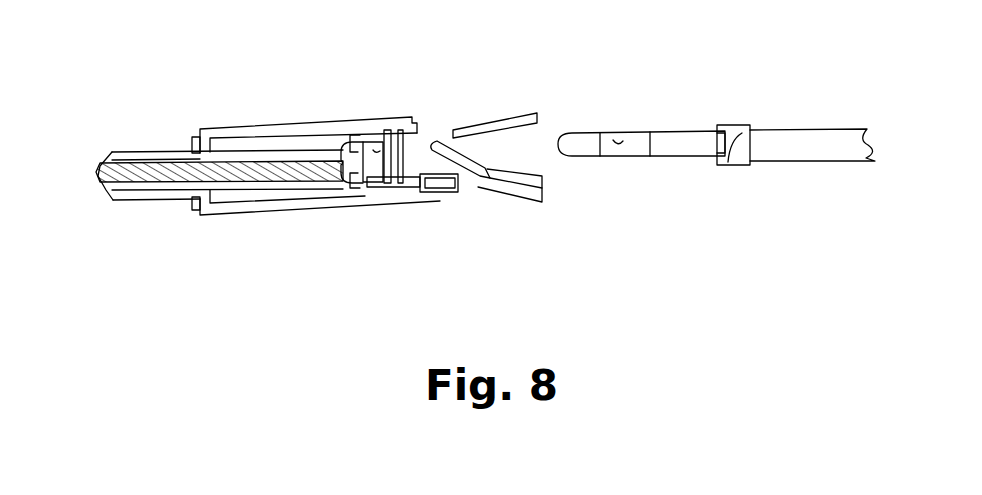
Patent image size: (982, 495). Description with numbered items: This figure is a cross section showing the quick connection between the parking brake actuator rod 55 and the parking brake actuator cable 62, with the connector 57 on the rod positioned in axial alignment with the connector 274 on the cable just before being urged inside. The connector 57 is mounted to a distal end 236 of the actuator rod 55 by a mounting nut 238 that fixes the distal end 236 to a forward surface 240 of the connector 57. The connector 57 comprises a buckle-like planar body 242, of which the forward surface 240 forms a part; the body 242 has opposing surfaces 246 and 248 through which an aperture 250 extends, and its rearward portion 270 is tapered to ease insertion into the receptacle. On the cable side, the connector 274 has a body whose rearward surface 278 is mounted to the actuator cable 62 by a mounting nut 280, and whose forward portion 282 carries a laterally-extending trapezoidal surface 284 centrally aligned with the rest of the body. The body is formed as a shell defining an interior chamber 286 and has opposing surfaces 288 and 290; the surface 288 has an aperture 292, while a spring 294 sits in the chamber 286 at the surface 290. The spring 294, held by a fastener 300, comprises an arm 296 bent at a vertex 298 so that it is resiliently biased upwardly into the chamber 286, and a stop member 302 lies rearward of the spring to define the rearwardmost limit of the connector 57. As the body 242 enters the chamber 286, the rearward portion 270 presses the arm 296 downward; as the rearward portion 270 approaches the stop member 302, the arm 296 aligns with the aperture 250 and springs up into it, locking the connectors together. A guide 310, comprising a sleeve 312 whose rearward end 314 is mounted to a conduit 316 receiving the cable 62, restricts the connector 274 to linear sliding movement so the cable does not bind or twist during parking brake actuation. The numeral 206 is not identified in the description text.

The actuator rod 55 is at (788, 163).
The connector 57 is at (673, 130).
The parking brake actuator cable 62 is at (239, 152).
The connector tab 206 is at (487, 193).
The distal end 236 is at (750, 128).
The mounting nut 238 is at (740, 127).
The forward surface 240 is at (743, 150).
The planar body 242 is at (658, 159).
The opposing surface 246 is at (698, 130).
The opposing surface 248 is at (686, 157).
The aperture 250 is at (621, 141).
The rearward portion 270 is at (556, 130).
The connector 274 is at (474, 126).
The rearward surface 278 is at (348, 135).
The mounting nut 280 is at (341, 188).
The forward portion 282 is at (492, 124).
The trapezoidal surface 284 is at (527, 200).
The interior chamber 286 is at (375, 150).
The opposing surface 288 is at (392, 133).
The opposing surface 290 is at (377, 188).
The aperture 292 is at (425, 130).
The spring 294 is at (480, 153).
The arm 296 is at (462, 108).
The vertex 298 is at (541, 168).
The fastener 300 is at (466, 193).
The stop member 302 is at (418, 193).
The guide 310 is at (351, 122).
The sleeve 312 is at (282, 209).
The rearward end 314 is at (192, 125).
The conduit 316 is at (152, 150).